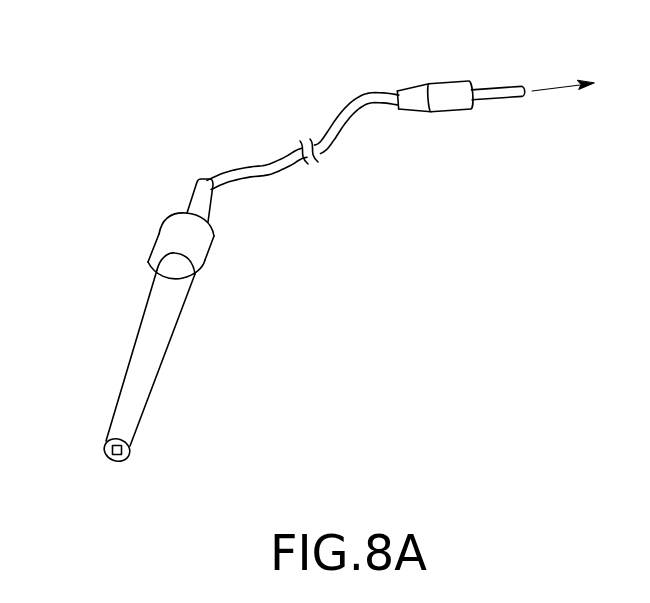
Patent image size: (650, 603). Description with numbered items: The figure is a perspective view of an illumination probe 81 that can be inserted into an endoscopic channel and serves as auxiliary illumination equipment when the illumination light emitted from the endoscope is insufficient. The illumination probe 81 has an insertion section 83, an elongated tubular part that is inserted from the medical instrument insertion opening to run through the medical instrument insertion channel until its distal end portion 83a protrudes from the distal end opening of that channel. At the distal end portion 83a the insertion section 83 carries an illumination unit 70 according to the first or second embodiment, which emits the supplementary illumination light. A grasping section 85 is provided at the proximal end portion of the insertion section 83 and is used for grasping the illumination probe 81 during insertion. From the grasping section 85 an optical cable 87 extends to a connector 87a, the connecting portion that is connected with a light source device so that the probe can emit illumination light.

The illumination probe 81 is at (215, 127).
The insertion section 83 is at (158, 320).
The distal end portion 83a is at (130, 452).
The illumination unit 70 is at (105, 450).
The grasping section 85 is at (170, 228).
The optical cable 87 is at (334, 137).
The connector 87a is at (453, 98).